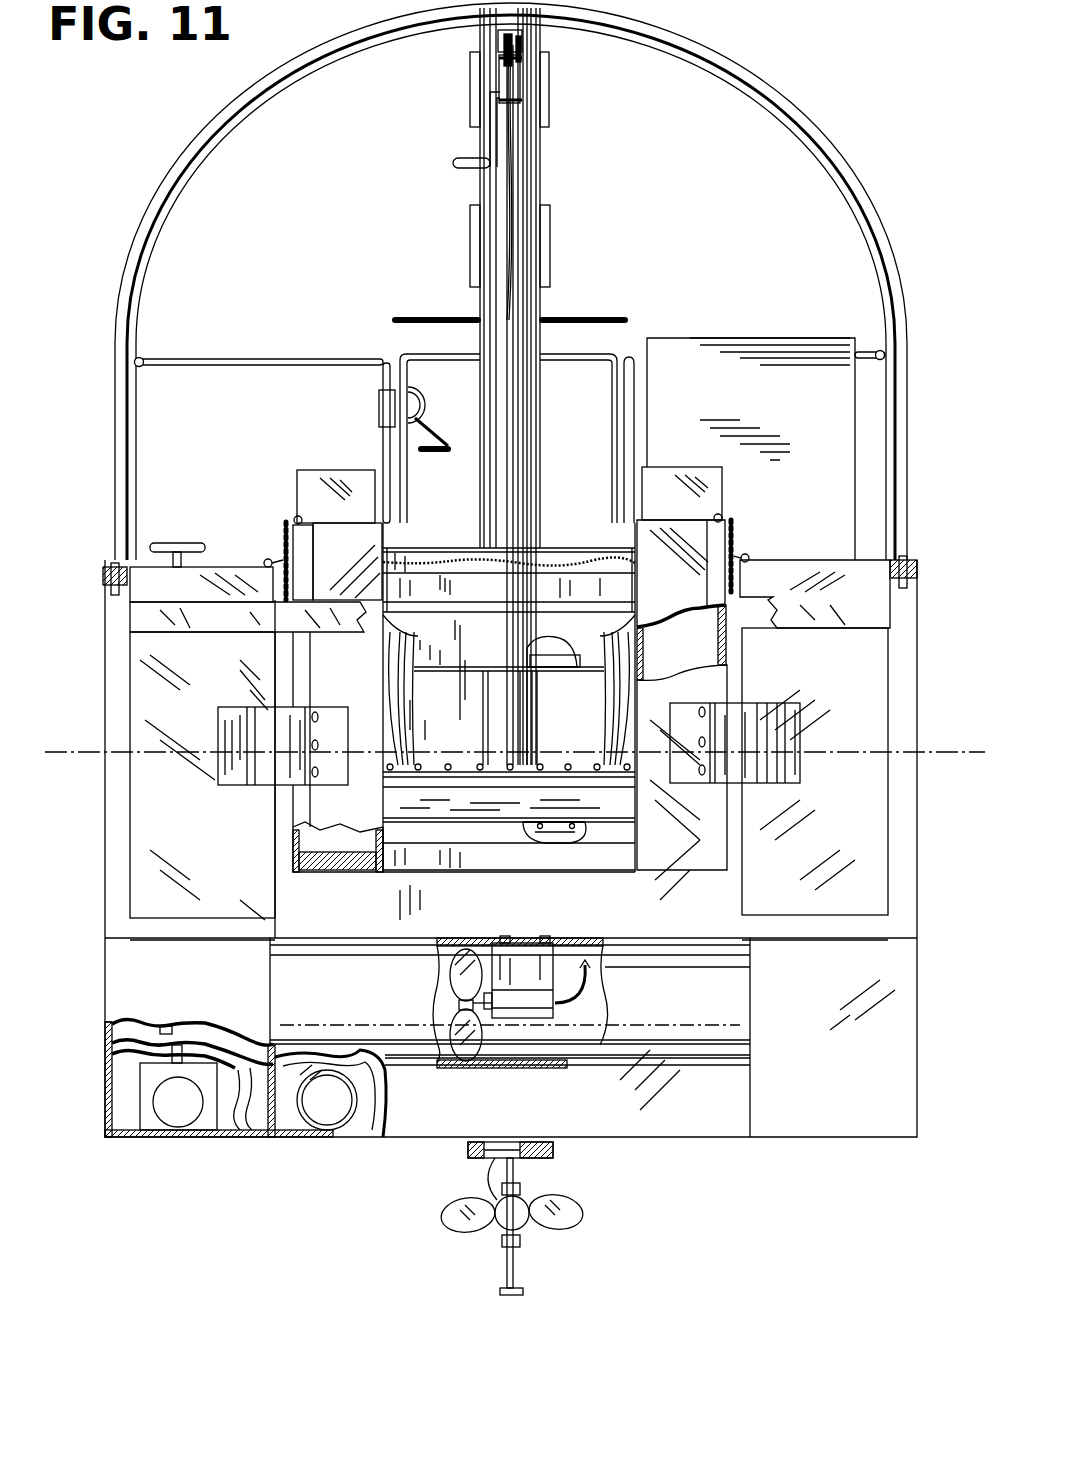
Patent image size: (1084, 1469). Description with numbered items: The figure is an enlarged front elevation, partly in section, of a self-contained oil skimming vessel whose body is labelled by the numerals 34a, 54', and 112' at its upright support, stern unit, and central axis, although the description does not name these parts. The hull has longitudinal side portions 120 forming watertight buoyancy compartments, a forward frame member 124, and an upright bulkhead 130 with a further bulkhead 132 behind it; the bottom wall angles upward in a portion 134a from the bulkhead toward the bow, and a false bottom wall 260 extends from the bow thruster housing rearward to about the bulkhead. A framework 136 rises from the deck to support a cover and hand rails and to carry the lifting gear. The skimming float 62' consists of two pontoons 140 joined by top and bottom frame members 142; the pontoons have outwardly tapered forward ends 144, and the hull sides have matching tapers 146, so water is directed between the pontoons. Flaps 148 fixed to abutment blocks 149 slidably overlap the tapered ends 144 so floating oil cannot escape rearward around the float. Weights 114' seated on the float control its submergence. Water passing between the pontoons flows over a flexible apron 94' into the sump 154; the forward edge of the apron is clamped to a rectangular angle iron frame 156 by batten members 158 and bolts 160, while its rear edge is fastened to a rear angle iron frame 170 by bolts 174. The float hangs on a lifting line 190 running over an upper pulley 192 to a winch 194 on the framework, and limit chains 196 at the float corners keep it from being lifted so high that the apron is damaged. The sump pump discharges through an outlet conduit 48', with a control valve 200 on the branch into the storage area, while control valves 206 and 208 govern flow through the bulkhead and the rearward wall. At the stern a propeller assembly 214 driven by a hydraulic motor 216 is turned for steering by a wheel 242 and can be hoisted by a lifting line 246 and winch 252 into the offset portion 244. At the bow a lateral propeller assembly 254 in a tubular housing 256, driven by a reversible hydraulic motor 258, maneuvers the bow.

The lower compartment 34a is at (125, 995).
The outlet conduit 48' is at (548, 182).
The control unit 54' is at (766, 436).
The float 62' is at (284, 550).
The flexible apron 94' is at (509, 690).
The center axis 112' is at (515, 719).
The weights 114' is at (509, 481).
The longitudinal side portions 120 is at (130, 790).
The forward frame member 124 is at (150, 618).
The upright bulkhead 130 is at (458, 632).
The bulkhead 132 is at (250, 1123).
The bottom wall portion 134a is at (298, 1122).
The framework 136 is at (167, 359).
The pontoons 140 is at (337, 535).
The frame members 142 is at (466, 528).
The forward ends 144 is at (325, 670).
The tapers 146 is at (150, 715).
The flaps 148 is at (345, 706).
The abutment blocks 149 is at (247, 772).
The sump 154 is at (273, 1120).
The angle iron frame 156 is at (532, 612).
The batten members 158 is at (553, 767).
The bolts 160 is at (478, 764).
The rear angle iron frame 170 is at (568, 668).
The bolts 174 is at (573, 838).
The lifting line 190 is at (505, 307).
The upper pulley 192 is at (522, 42).
The winch 194 is at (520, 88).
The limit chains 196 is at (283, 558).
The control valve 200 is at (546, 245).
The control valve 206 is at (357, 1130).
The control valve 208 is at (152, 1123).
The propeller assembly 214 is at (567, 1220).
The hydraulic motor 216 is at (500, 1223).
The wheel 242 is at (412, 318).
The offset portion 244 is at (112, 1100).
The lifting line 246 is at (506, 438).
The winch 252 is at (428, 410).
The forward propeller assembly 254 is at (465, 1062).
The lateral tubular housing 256 is at (530, 1068).
The reversible hydraulic motor 258 is at (565, 1068).
The false bottom wall 260 is at (663, 1105).